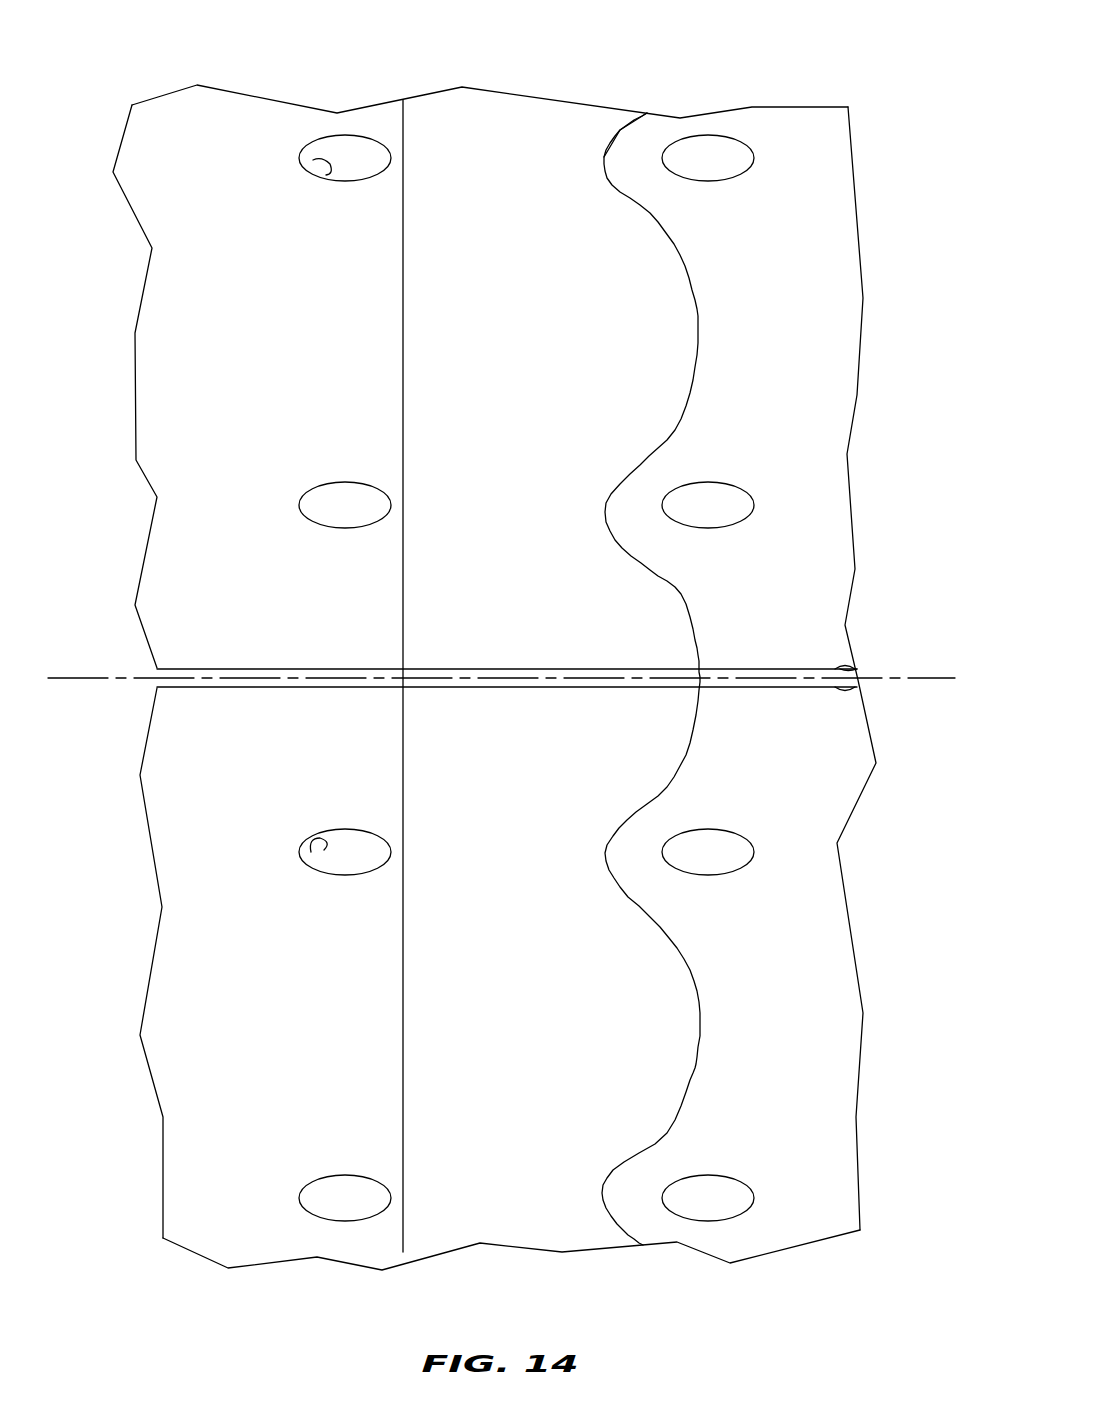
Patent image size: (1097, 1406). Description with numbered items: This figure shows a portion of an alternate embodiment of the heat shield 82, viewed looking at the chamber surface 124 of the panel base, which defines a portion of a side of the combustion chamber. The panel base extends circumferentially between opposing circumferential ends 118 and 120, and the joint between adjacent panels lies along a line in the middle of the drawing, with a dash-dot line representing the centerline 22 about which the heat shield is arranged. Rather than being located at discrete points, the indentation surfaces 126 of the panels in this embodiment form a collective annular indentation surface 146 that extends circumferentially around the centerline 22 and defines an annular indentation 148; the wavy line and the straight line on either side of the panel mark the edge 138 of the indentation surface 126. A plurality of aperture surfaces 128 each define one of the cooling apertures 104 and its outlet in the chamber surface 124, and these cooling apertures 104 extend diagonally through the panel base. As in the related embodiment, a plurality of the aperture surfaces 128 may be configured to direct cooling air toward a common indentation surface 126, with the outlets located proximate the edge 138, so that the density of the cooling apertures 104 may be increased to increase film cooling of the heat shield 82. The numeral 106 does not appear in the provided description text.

The centerline 22 is at (80, 678).
The heat shield 82 is at (531, 649).
The cooling aperture 104 is at (357, 145).
The panel section 106 is at (503, 340).
The circumferential end 118 is at (858, 688).
The circumferential end 120 is at (857, 671).
The chamber surface 124 is at (831, 329).
The indentation surface 126 is at (505, 117).
The aperture surface 128 is at (326, 175).
The edge of the indentation surface 138 is at (403, 590).
The collective annular indentation surface 146 is at (612, 88).
The annular indentation 148 is at (583, 142).